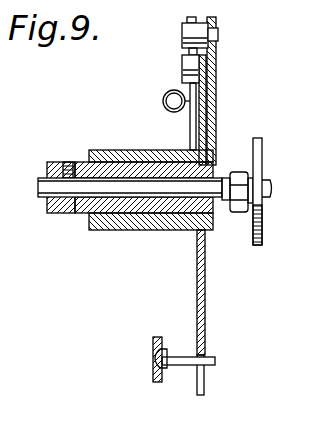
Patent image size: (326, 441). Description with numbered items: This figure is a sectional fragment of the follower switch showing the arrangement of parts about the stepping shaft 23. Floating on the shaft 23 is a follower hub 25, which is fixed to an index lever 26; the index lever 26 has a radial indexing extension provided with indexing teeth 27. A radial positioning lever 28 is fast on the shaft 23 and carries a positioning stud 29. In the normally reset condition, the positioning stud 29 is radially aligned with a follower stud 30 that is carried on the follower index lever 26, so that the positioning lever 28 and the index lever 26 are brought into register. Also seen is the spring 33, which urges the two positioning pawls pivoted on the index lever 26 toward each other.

The stepping shaft 23 is at (268, 192).
The follower hub 25 is at (96, 150).
The index lever 26 is at (190, 130).
The indexing teeth 27 is at (208, 382).
The radial positioning lever 28 is at (216, 107).
The positioning stud 29 is at (182, 43).
The follower stud 30 is at (182, 72).
The spring 33 is at (163, 105).